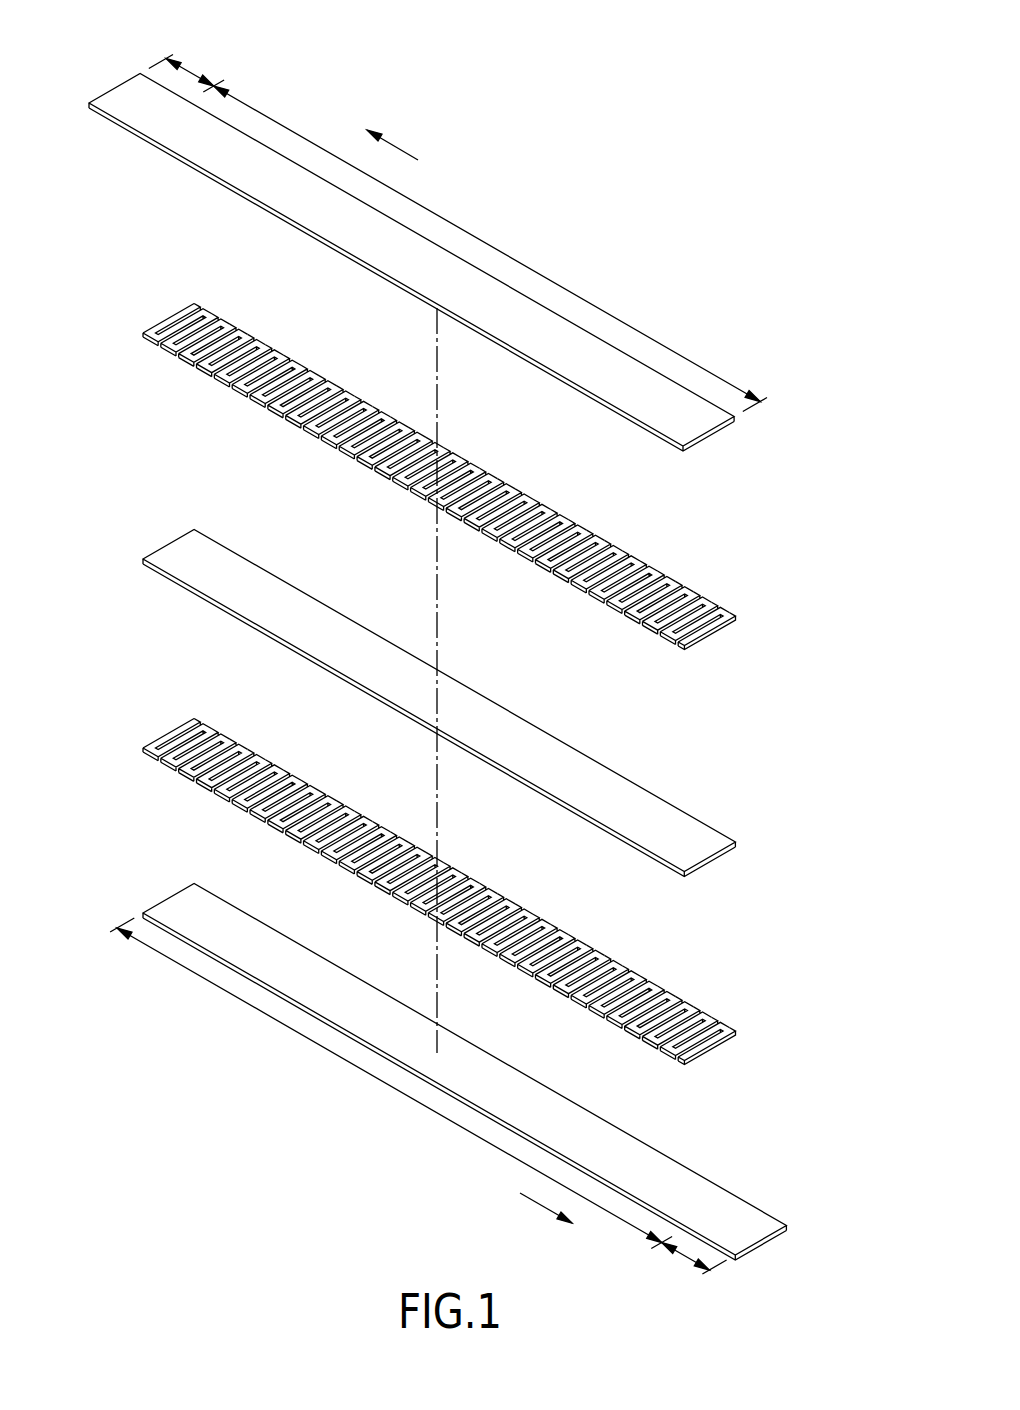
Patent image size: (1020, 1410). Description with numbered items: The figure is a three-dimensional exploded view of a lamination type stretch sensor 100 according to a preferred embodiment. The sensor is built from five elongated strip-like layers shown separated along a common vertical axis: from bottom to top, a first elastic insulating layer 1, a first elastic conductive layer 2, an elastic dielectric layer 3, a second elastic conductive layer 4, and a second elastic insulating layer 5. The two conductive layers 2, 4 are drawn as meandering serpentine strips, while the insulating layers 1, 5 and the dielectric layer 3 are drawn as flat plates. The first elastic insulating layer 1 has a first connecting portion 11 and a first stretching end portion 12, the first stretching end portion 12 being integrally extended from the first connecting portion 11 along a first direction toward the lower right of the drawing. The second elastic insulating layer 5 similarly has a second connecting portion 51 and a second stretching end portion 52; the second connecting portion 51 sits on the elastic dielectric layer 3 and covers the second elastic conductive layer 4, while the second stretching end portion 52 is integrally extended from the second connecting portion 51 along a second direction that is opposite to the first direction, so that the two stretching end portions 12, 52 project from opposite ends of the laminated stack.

The lamination type stretch sensor 100 is at (733, 245).
The first elastic insulating layer 1 is at (752, 1238).
The first connecting portion 11 is at (388, 1086).
The first stretching end portion 12 is at (678, 1258).
The first elastic conductive layer 2 is at (733, 1035).
The elastic dielectric layer 3 is at (697, 850).
The second elastic conductive layer 4 is at (733, 620).
The second elastic insulating layer 5 is at (693, 422).
The second connecting portion 51 is at (488, 243).
The second stretching end portion 52 is at (191, 72).